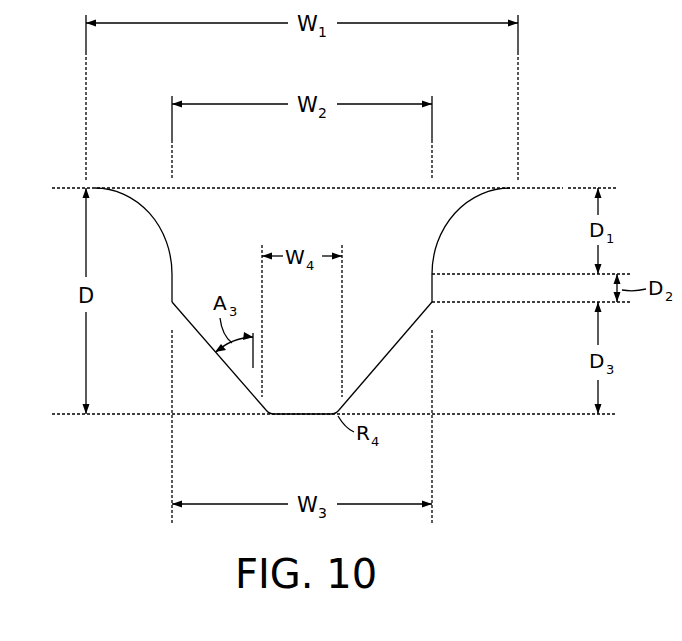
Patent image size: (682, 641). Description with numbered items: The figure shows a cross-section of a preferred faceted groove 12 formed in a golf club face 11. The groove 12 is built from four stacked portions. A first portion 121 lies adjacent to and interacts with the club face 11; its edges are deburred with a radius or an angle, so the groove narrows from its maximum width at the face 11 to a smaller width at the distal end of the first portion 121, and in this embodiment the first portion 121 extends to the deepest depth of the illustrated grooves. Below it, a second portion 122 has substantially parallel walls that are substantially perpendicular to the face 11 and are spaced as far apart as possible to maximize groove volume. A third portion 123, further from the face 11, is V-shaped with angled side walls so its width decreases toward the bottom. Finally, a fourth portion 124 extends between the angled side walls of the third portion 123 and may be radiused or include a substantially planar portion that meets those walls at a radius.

The club face 11 is at (82, 186).
The faceted groove 12 is at (342, 245).
The first portion 121 is at (145, 213).
The second portion 122 is at (430, 281).
The third portion 123 is at (222, 361).
The fourth portion 124 is at (270, 416).